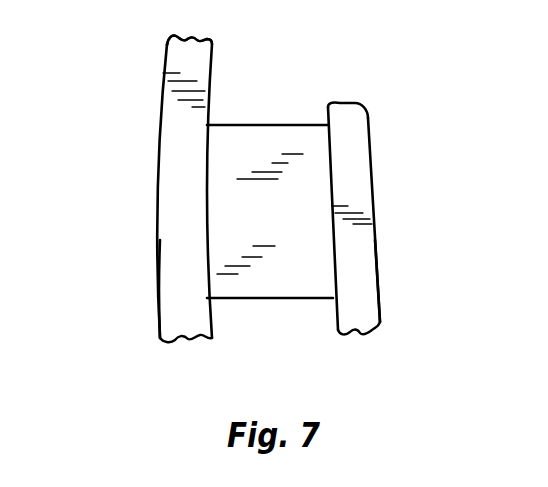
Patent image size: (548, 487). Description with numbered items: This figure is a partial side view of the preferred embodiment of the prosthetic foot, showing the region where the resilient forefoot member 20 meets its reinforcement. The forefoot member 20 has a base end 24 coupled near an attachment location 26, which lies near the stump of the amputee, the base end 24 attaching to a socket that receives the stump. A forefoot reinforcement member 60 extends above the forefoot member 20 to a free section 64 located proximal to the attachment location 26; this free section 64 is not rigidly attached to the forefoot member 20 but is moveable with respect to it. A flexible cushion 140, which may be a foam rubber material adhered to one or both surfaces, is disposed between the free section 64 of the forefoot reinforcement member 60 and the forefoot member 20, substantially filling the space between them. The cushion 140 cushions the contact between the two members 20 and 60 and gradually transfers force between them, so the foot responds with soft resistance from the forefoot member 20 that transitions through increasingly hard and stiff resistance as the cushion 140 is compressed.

The forefoot member 20 is at (157, 297).
The base end 24 is at (166, 58).
The attachment location 26 is at (213, 50).
The forefoot reinforcement member 60 is at (380, 308).
The free section 64 is at (368, 138).
The flexible cushion 140 is at (272, 299).